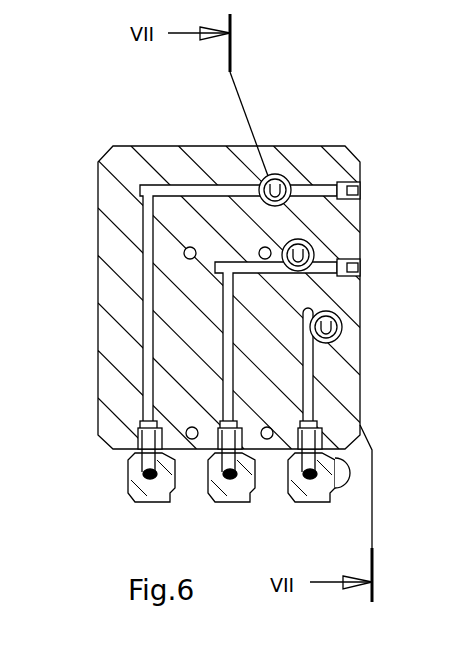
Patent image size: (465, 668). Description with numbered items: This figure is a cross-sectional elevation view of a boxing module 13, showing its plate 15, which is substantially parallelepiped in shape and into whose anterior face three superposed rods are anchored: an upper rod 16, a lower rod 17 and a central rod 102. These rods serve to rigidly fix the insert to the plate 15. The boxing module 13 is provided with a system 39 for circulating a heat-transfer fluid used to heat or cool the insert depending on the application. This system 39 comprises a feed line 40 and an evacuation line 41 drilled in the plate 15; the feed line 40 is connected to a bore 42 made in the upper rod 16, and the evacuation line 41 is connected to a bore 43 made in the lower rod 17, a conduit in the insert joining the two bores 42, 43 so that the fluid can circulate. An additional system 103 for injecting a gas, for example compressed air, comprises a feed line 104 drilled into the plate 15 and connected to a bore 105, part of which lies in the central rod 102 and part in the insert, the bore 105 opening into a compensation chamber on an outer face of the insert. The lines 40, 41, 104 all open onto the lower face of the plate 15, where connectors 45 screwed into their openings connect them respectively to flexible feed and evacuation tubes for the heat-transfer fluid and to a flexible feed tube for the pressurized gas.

The boxing module 13 is at (305, 84).
The plate 15 is at (165, 160).
The upper rod 16 is at (293, 170).
The lower rod 17 is at (340, 333).
The system for circulating a heat-transfer fluid 39 is at (132, 305).
The feed line 40 is at (146, 237).
The evacuation line 41 is at (314, 402).
The bore 42 is at (242, 168).
The bore 43 is at (340, 316).
The connectors 45 is at (135, 500).
The central rod 102 is at (320, 278).
The system for injection of a gas 103 is at (210, 395).
The feed line for the gas 104 is at (222, 370).
The bore 105 is at (308, 240).